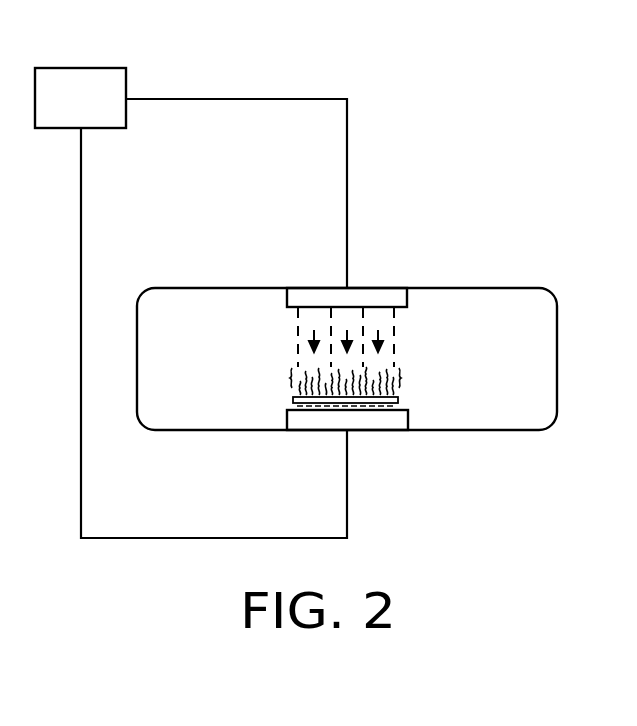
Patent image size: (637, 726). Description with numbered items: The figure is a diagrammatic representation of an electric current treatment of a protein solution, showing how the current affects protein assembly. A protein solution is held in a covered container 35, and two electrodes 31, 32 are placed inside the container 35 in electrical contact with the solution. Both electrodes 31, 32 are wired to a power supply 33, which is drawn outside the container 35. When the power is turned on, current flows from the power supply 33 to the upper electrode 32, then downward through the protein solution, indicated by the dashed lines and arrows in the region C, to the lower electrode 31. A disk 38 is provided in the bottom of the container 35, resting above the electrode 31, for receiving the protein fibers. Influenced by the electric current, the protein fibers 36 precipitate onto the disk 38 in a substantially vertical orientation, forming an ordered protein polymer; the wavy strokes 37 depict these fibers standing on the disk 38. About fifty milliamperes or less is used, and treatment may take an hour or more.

The electrode 31 is at (356, 422).
The electrode 32 is at (320, 297).
The power supply 33 is at (75, 80).
The covered container 35 is at (216, 287).
The protein fibers 36 is at (402, 382).
The plasma / sputtered particles 37 is at (290, 373).
The disk 38 is at (402, 400).
The sputtering region C is at (383, 340).